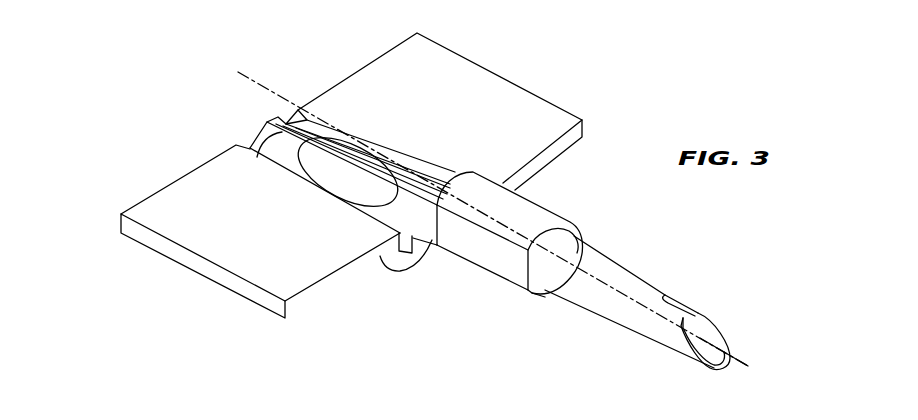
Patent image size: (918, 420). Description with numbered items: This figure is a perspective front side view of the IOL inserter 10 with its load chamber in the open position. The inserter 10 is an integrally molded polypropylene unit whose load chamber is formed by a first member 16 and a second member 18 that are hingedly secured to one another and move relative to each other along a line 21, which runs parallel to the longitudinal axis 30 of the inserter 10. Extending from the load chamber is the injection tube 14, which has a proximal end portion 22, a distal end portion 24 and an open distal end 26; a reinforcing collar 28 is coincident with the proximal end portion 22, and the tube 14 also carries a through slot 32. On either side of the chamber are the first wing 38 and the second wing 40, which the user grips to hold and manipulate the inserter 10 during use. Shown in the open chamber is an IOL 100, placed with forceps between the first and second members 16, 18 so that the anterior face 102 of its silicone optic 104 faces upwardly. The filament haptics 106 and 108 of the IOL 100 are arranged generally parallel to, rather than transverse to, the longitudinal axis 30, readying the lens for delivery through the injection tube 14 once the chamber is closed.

The IOL inserter 10 is at (105, 98).
The injection tube 14 is at (541, 301).
The first member 16 is at (258, 135).
The second member 18 is at (297, 106).
The line 21 is at (264, 160).
The proximal end portion 22 is at (476, 279).
The distal end portion 24 is at (665, 346).
The open distal end 26 is at (710, 344).
The reinforcing collar 28 is at (541, 212).
The longitudinal axis 30 is at (750, 362).
The through slot 32 is at (665, 297).
The first wing 38 is at (248, 265).
The second wing 40 is at (560, 118).
The IOL 100 is at (316, 179).
The anterior face 102 is at (347, 143).
The optic 104 is at (388, 158).
The filament haptic 106 is at (303, 110).
The filament haptic 108 is at (410, 233).